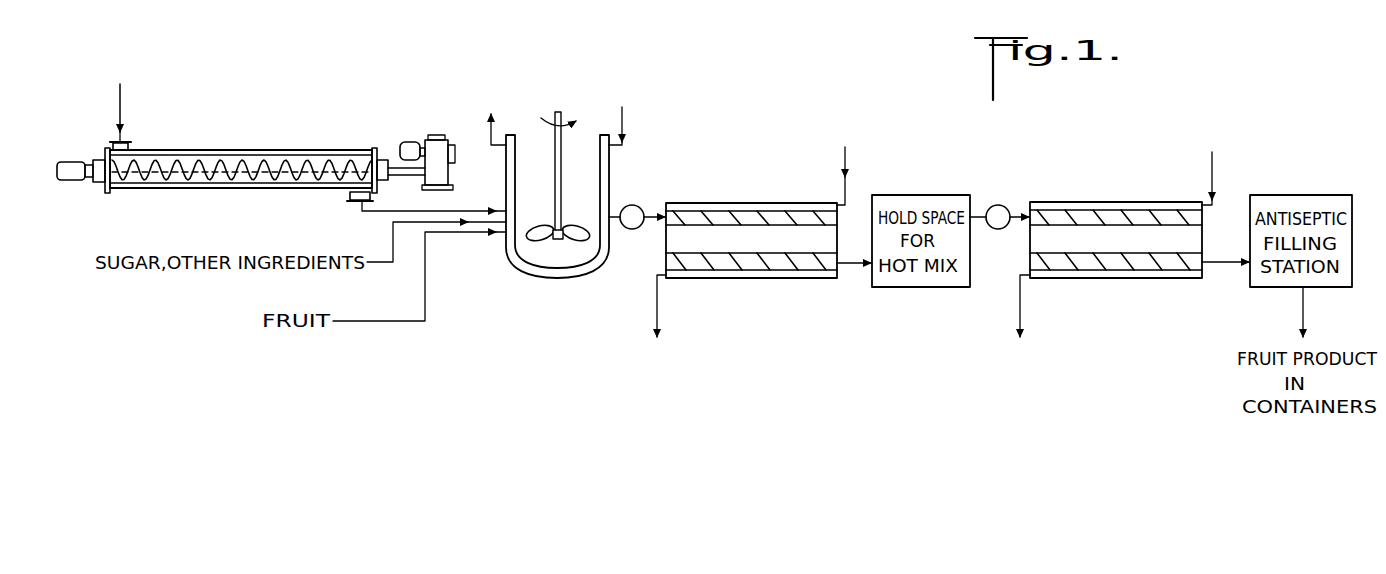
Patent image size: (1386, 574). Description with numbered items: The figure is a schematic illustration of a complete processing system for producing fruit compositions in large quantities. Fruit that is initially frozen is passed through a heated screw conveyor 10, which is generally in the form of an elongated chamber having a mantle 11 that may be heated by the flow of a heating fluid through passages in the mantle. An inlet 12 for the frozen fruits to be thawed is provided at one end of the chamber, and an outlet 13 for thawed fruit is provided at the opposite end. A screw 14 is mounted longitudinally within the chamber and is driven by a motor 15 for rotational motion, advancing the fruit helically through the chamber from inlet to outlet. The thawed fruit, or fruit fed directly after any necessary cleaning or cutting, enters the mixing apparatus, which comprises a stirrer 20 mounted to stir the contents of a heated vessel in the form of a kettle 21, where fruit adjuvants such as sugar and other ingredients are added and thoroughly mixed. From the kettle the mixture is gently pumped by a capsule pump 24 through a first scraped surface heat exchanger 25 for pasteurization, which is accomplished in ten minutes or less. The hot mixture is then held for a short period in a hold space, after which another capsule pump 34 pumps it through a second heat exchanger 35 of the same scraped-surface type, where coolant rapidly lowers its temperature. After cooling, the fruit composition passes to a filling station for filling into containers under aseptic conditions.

The screw conveyor 10 is at (281, 136).
The mantle 11 is at (354, 146).
The inlet 12 is at (112, 141).
The outlet 13 is at (348, 197).
The screw 14 is at (157, 177).
The motor 15 is at (412, 141).
The stirrer 20 is at (563, 230).
The kettle 21 is at (584, 197).
The capsule pump 24 is at (637, 205).
The scraped surface heat exchanger 25 is at (768, 284).
The capsule pump 34 is at (996, 205).
The heat exchanger 35 is at (1107, 281).